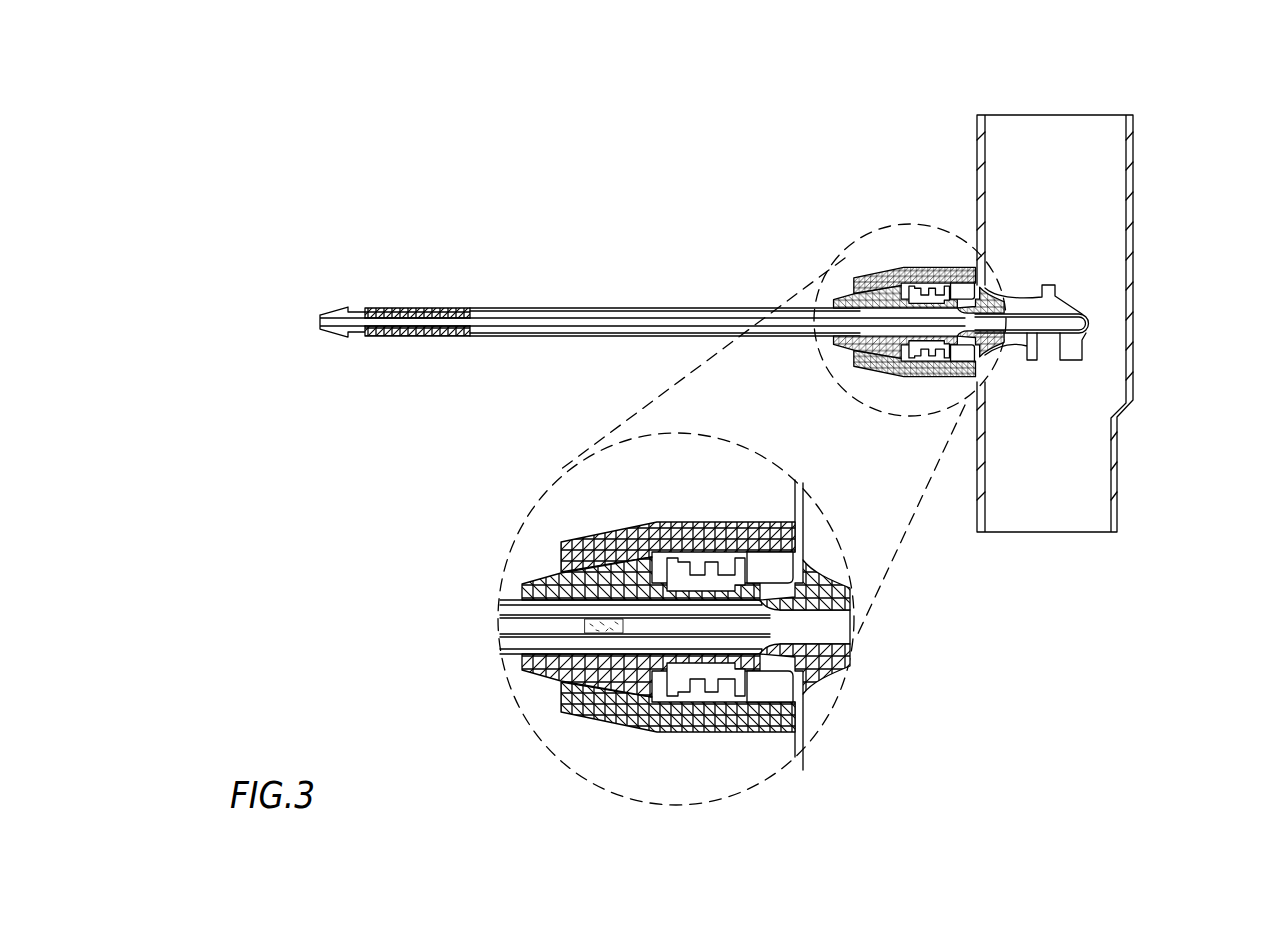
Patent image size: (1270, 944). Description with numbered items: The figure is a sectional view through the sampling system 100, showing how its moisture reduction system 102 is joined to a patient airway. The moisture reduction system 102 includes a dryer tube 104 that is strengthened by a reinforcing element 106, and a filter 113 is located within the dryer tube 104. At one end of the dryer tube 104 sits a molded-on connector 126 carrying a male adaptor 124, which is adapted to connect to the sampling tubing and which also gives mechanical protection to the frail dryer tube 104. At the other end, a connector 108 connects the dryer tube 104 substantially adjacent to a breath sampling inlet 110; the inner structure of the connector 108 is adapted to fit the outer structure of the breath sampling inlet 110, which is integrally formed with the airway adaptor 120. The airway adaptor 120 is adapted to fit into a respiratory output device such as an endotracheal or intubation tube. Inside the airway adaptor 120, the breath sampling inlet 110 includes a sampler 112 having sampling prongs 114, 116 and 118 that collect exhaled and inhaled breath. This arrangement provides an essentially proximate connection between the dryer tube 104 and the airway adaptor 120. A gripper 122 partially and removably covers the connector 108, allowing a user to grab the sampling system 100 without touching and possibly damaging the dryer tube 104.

The sampling system 100 is at (740, 73).
The moisture reduction system 102 is at (586, 297).
The dryer tube 104 is at (512, 626).
The reinforcing element 106 is at (497, 600).
The connector 108 is at (547, 590).
The breath sampling inlet 110 is at (735, 562).
The sampler 112 is at (1090, 322).
The filter 113 is at (600, 628).
The sampling prong 114 is at (1047, 285).
The sampling prong 116 is at (1068, 362).
The sampling prong 118 is at (1035, 362).
The airway adaptor 120 is at (1157, 212).
The gripper 122 is at (625, 527).
The male adaptor 124 is at (340, 298).
The molded-on connector 126 is at (434, 296).